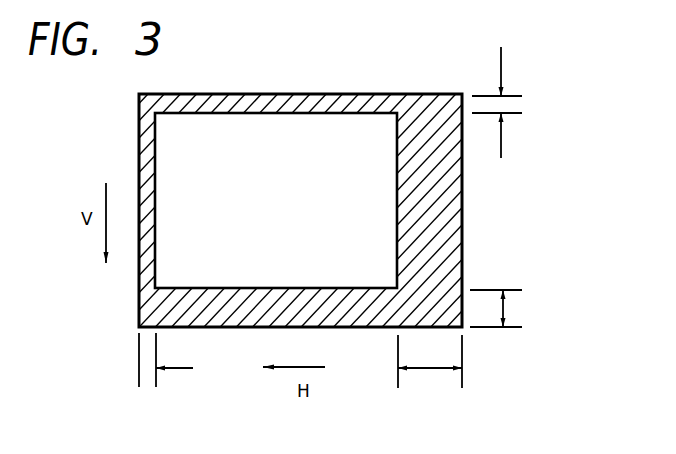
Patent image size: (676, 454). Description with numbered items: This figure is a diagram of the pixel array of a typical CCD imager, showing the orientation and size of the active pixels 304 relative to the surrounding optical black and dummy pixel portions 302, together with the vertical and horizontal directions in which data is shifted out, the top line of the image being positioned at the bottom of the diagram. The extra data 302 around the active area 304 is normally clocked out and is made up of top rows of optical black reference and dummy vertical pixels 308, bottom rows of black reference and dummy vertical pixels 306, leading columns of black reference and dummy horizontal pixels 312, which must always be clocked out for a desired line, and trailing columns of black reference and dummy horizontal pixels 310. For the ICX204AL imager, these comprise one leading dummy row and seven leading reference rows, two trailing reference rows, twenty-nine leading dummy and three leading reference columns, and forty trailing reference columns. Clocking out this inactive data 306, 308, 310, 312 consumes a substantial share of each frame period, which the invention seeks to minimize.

The optical black and dummy pixel portions 302 is at (443, 245).
The active pixels 304 is at (276, 200).
The bottom rows of black reference and dummy vertical pixels 306 is at (522, 102).
The top rows of optical black reference and dummy vertical pixels 308 is at (521, 308).
The trailing columns of black reference and dummy horizontal pixels 310 is at (430, 374).
The leading columns of black reference and dummy horizontal pixels 312 is at (139, 368).